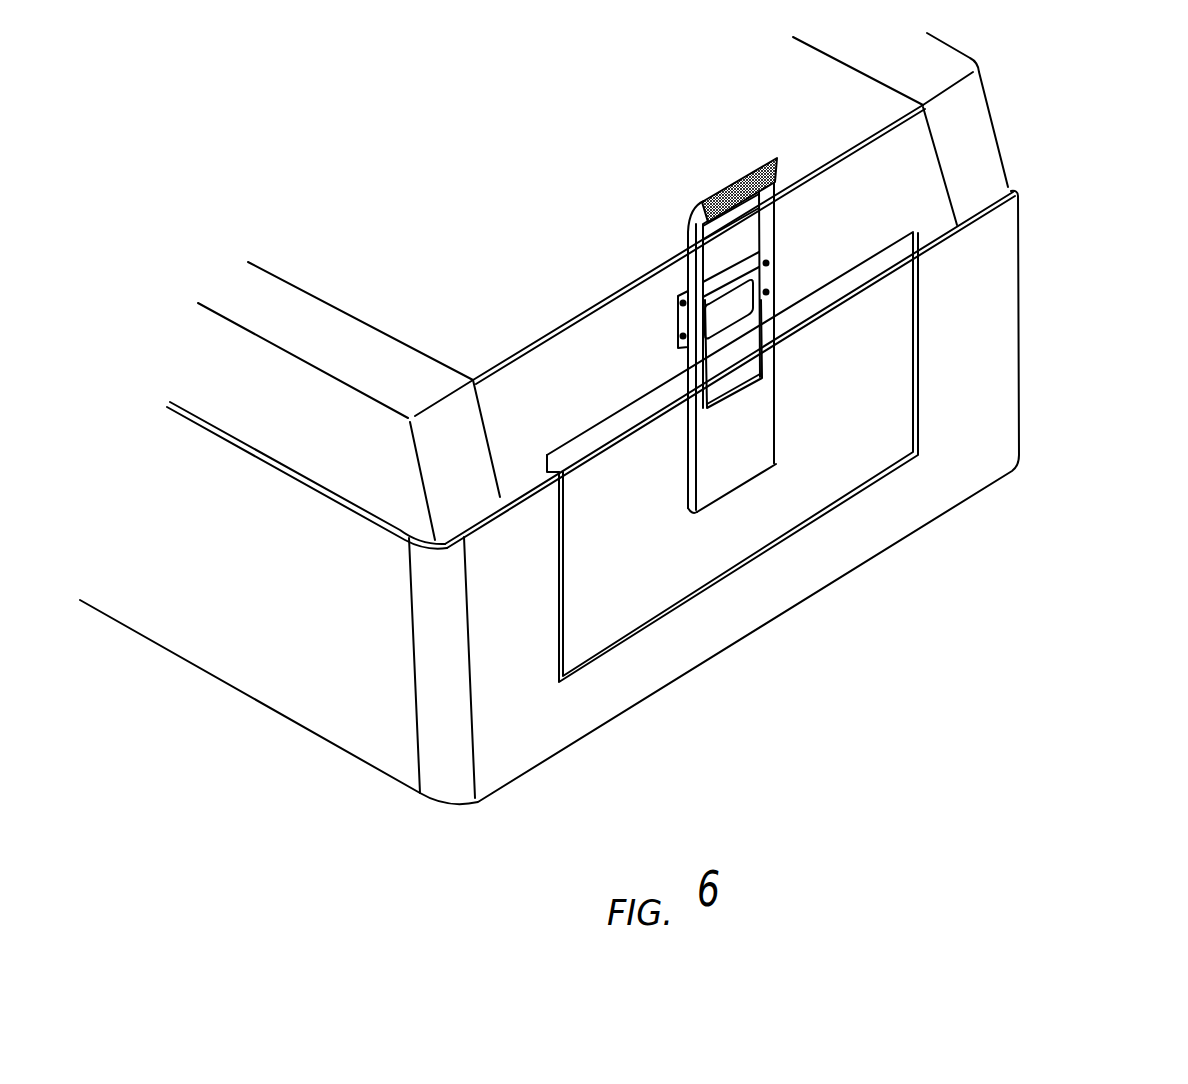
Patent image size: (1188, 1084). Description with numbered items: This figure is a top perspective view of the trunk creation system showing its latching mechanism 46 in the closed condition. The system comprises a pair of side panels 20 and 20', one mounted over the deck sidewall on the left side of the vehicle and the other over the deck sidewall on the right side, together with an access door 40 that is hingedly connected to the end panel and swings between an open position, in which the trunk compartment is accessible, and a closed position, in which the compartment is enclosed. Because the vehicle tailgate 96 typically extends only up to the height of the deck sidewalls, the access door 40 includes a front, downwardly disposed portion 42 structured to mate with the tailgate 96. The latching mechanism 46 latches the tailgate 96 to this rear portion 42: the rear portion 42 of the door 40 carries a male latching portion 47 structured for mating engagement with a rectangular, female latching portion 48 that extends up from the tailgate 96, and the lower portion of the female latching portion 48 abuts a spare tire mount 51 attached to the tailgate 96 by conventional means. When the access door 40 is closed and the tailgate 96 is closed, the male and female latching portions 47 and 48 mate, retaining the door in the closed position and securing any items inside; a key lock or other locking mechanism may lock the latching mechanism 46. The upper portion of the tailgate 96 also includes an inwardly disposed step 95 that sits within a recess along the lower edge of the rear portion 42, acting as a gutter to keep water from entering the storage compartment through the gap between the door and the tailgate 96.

The side panel 20 is at (570, 293).
The second side panel 20' is at (1021, 110).
The access door 40 is at (613, 160).
The front, downwardly disposed portion 42 is at (523, 427).
The latching mechanism 46 is at (792, 268).
The male latching portion 47 is at (732, 308).
The female latching portion 48 is at (683, 318).
The spare tire mount 51 is at (728, 450).
The inwardly disposed step 95 is at (597, 438).
The tailgate 96 is at (847, 465).